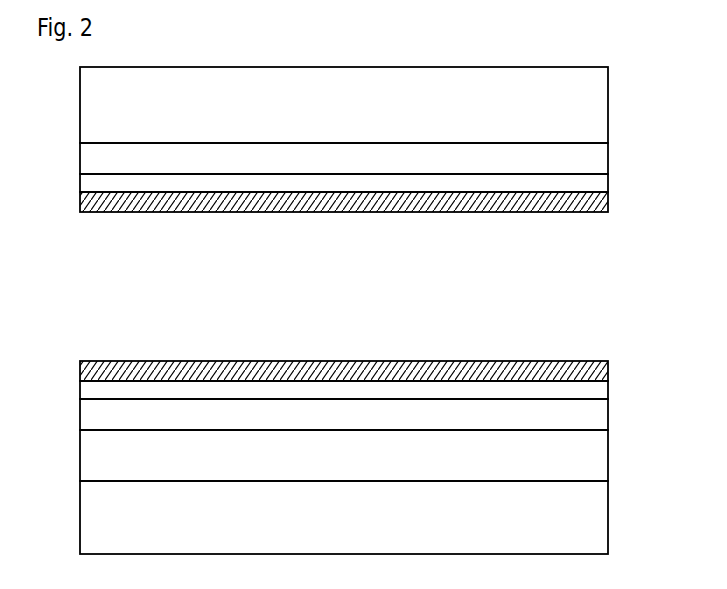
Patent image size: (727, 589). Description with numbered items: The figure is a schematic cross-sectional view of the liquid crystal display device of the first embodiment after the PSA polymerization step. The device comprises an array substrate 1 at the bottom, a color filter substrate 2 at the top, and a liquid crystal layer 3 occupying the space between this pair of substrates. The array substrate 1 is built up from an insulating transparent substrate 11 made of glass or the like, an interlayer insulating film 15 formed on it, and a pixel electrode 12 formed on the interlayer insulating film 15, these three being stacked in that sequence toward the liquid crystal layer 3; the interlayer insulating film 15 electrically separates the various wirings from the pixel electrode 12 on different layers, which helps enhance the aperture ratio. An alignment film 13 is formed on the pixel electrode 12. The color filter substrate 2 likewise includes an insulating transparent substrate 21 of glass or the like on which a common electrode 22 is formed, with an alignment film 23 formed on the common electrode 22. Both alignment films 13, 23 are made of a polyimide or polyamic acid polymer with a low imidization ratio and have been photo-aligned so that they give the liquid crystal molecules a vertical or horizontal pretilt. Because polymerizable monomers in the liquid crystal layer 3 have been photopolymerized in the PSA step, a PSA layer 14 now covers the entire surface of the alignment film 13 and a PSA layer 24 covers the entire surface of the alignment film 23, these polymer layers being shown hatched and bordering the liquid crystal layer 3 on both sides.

The array substrate 1 is at (358, 465).
The color filter substrate 2 is at (358, 135).
The liquid crystal layer 3 is at (72, 213).
The transparent substrate 11 is at (598, 519).
The pixel electrode 12 is at (598, 421).
The alignment film 13 is at (598, 391).
The PSA layer 14 is at (606, 373).
The interlayer insulating film 15 is at (598, 458).
The transparent substrate 21 is at (598, 103).
The common electrode 22 is at (598, 154).
The alignment film 23 is at (598, 186).
The PSA layer 24 is at (606, 207).